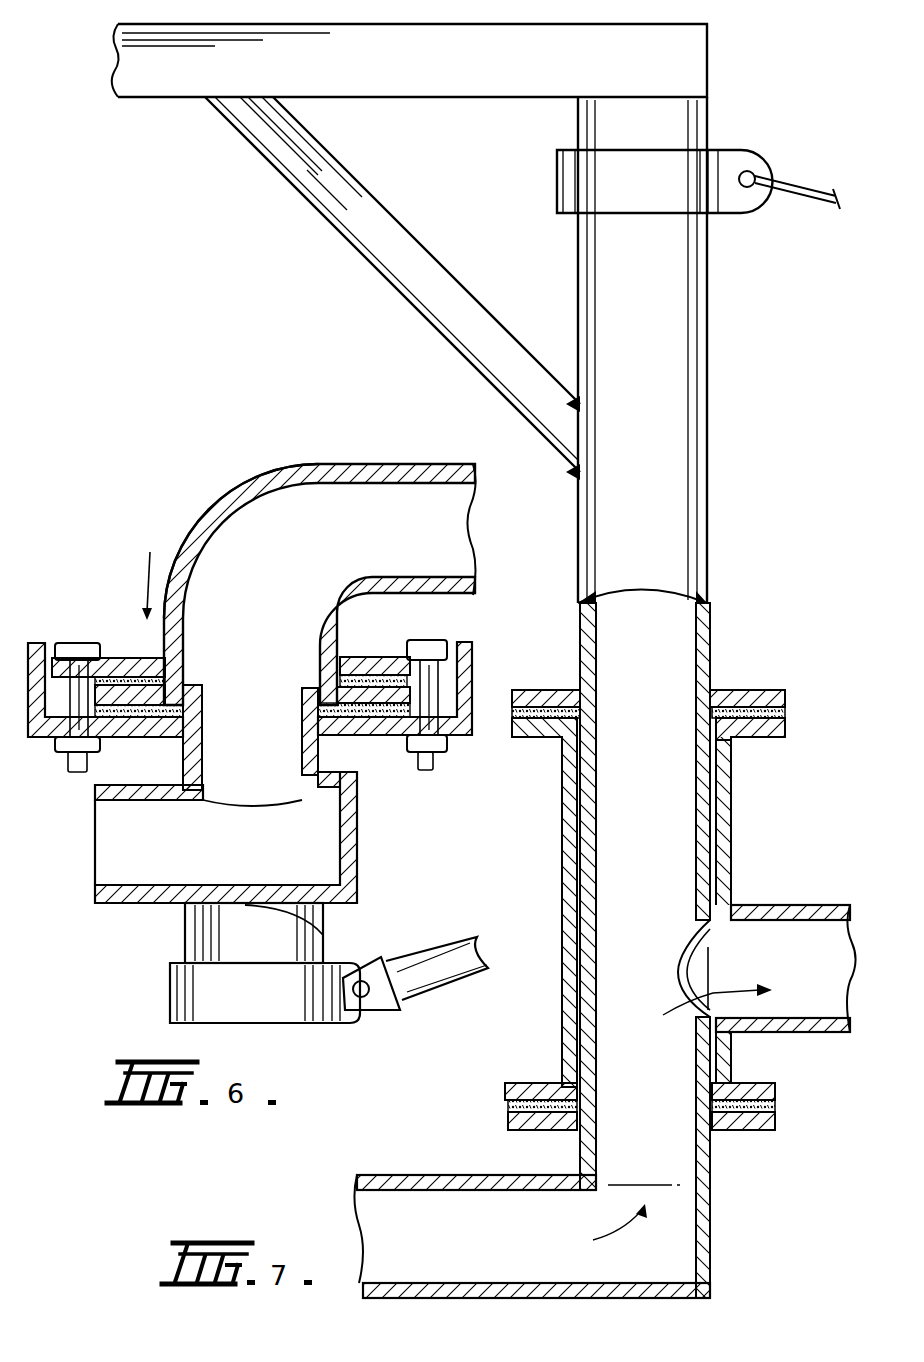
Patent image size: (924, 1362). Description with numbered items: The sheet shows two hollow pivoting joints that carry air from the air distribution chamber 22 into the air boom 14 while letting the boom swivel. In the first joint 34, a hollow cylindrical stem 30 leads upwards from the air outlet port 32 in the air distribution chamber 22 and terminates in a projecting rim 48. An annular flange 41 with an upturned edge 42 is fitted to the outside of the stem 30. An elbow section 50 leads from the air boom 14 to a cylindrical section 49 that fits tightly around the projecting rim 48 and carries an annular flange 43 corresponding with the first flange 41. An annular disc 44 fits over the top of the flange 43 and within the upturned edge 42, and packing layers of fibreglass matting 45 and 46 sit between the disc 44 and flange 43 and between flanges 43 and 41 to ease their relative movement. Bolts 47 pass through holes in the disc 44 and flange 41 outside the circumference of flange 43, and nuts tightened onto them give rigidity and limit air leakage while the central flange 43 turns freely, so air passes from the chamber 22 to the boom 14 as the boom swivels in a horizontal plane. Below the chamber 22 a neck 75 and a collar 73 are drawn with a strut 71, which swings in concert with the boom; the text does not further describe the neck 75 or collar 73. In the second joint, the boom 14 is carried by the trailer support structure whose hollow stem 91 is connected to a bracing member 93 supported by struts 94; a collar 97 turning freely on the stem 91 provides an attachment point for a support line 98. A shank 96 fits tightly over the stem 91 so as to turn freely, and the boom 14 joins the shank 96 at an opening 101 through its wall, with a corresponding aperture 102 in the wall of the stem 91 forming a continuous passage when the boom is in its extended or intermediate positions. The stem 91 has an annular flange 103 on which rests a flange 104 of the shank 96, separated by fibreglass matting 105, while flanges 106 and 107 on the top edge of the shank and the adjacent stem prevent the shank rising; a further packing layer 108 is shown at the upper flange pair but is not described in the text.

In FIG. 7, the air boom 14 is at (798, 905).
In FIG. 6, the air boom 14 is at (390, 483).
In FIG. 7, the air distribution chamber 22 is at (532, 1236).
In FIG. 6, the air distribution chamber 22 is at (350, 865).
In FIG. 6, the hollow cylindrical stem 30 is at (323, 772).
In FIG. 6, the air outlet port 32 is at (261, 803).
In FIG. 6, the right-hand joint 34 is at (152, 568).
In FIG. 6, the annular flange 41 is at (153, 720).
In FIG. 6, the upturned edge 42 is at (466, 682).
In FIG. 6, the annular flange 43 is at (343, 707).
In FIG. 6, the annular disc 44 is at (110, 655).
In FIG. 6, the fibreglass matting 45 is at (366, 655).
In FIG. 6, the fibreglass matting 46 is at (330, 745).
In FIG. 6, the bolts 47 is at (73, 650).
In FIG. 6, the projecting rim 48 is at (317, 685).
In FIG. 6, the cylindrical section 49 is at (183, 647).
In FIG. 6, the elbow section 50 is at (238, 500).
In FIG. 6, the strut 71 is at (467, 957).
In FIG. 6, the clamp collar 73 is at (200, 988).
In FIG. 6, the lower neck 75 is at (213, 922).
In FIG. 7, the hollow stem 91 is at (600, 878).
In FIG. 7, the bracing member 93 is at (435, 60).
In FIG. 7, the struts 94 is at (265, 137).
In FIG. 7, the shank 96 is at (735, 830).
In FIG. 7, the collars 97 is at (558, 168).
In FIG. 7, the support lines 98 is at (805, 196).
In FIG. 7, the opening 101 is at (720, 948).
In FIG. 7, the aperture 102 is at (693, 933).
In FIG. 7, the annular flange 103 is at (520, 1122).
In FIG. 7, the flange 104 is at (520, 1095).
In FIG. 7, the fibreglass matting 105 is at (507, 1107).
In FIG. 7, the flange 106 is at (760, 722).
In FIG. 7, the flange 107 is at (745, 700).
In FIG. 7, the right gasket 108 is at (776, 700).